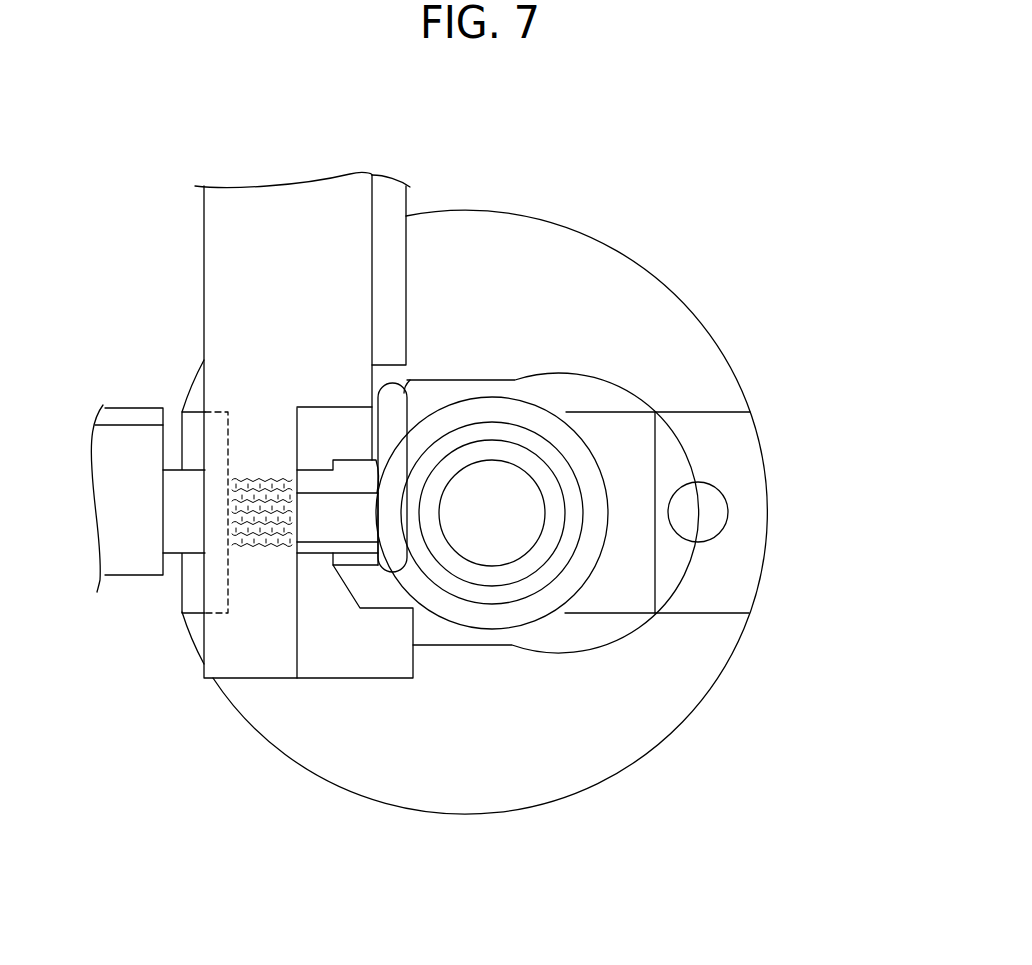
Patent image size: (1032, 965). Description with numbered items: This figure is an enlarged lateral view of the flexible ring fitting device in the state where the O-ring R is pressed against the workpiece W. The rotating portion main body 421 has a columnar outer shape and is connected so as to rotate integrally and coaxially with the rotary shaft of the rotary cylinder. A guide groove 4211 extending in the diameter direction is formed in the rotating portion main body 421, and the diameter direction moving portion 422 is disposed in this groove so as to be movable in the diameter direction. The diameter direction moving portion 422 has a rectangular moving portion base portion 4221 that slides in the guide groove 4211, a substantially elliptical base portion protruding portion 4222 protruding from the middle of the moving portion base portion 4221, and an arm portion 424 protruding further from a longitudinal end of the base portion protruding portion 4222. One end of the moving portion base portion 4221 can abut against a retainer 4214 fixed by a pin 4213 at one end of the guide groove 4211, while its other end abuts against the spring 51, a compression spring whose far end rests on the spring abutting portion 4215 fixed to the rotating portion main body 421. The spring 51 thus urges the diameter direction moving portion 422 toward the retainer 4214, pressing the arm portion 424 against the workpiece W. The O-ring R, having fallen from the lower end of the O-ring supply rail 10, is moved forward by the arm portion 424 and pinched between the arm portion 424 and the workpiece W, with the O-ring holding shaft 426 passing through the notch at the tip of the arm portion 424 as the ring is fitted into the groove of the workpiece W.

The O-ring supply rail 10 is at (293, 218).
The arm portion 424 is at (357, 470).
The O-ring R is at (402, 412).
The spring 51 is at (252, 475).
The guide groove 4211 is at (633, 413).
The pin 4213 is at (703, 518).
The retainer 4214 is at (743, 592).
The spring abutting portion 4215 is at (190, 592).
The O-ring holding shaft 426 is at (345, 525).
The workpiece W is at (467, 590).
The rotating portion main body 421 is at (457, 790).
The base portion protruding portion 4222 is at (522, 630).
The diameter direction moving portion 422 is at (602, 633).
The moving portion base portion 4221 is at (627, 593).